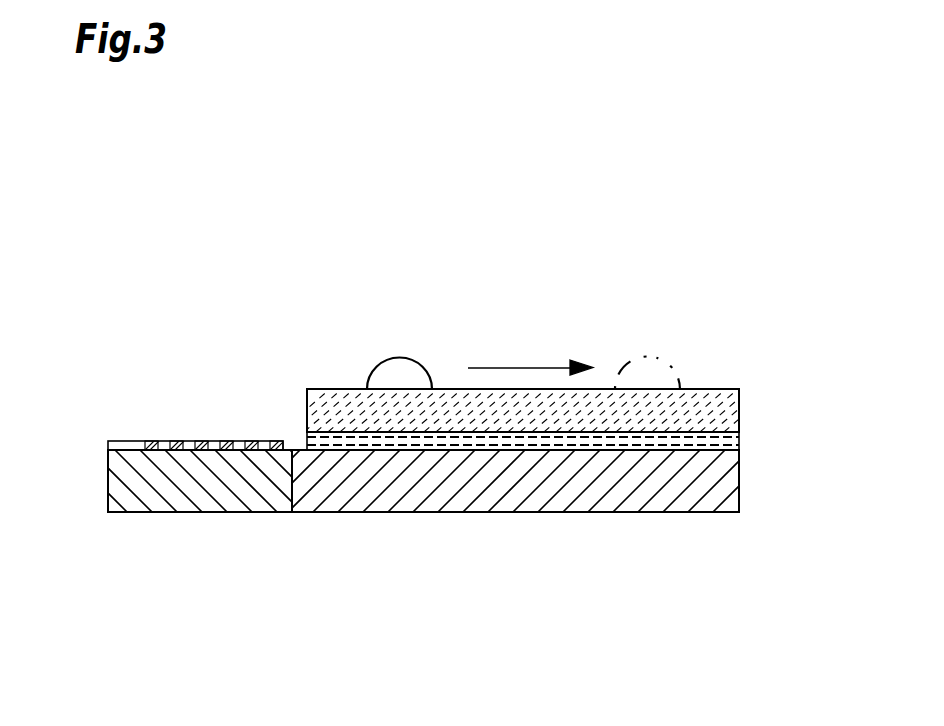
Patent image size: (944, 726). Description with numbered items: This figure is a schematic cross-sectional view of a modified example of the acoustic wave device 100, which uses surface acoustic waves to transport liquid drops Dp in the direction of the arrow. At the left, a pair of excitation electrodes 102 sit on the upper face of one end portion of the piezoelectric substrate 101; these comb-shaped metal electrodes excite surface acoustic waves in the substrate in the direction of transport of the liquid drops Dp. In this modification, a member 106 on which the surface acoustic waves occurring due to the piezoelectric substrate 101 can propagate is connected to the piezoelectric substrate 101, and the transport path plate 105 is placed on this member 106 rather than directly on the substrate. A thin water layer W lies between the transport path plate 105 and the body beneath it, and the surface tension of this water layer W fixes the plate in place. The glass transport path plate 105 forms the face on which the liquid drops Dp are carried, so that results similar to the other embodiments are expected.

The acoustic wave device 100 is at (280, 366).
The piezoelectric substrate 101 is at (108, 476).
The excitation electrodes 102 is at (156, 441).
The transport path plate 105 is at (325, 389).
The member 106 is at (739, 482).
The water layer W is at (739, 438).
The liquid drops Dp is at (400, 358).